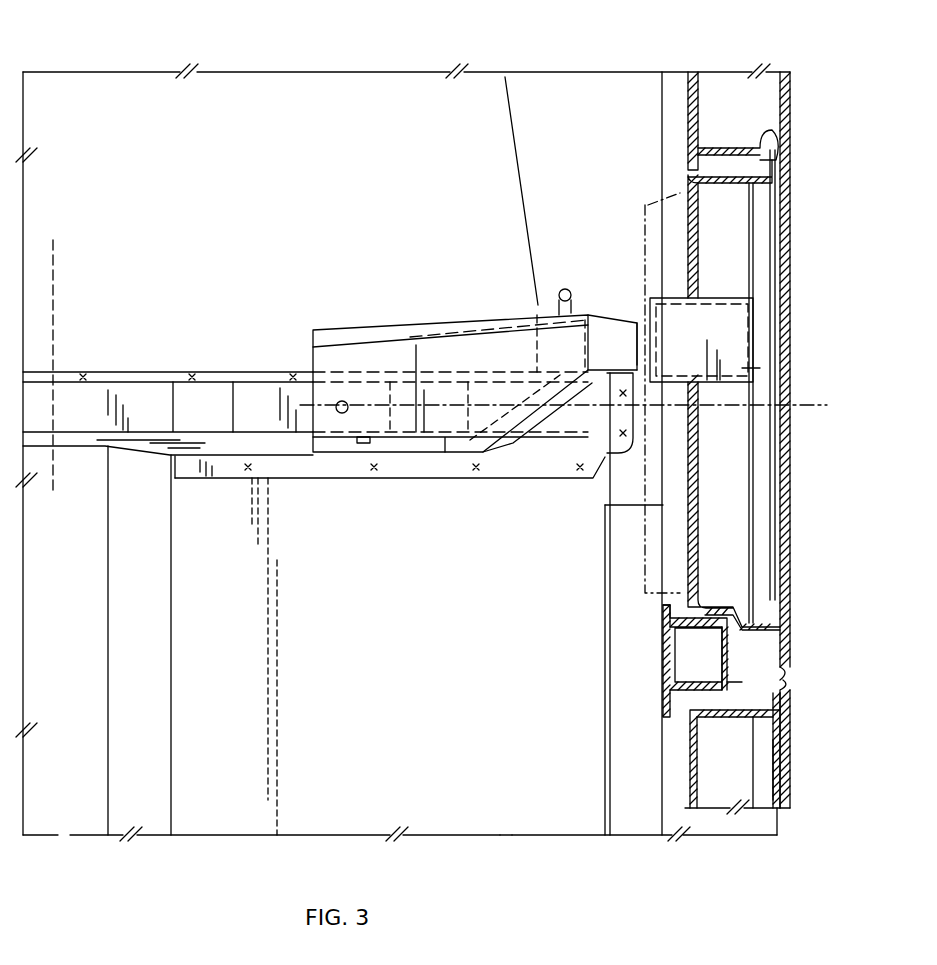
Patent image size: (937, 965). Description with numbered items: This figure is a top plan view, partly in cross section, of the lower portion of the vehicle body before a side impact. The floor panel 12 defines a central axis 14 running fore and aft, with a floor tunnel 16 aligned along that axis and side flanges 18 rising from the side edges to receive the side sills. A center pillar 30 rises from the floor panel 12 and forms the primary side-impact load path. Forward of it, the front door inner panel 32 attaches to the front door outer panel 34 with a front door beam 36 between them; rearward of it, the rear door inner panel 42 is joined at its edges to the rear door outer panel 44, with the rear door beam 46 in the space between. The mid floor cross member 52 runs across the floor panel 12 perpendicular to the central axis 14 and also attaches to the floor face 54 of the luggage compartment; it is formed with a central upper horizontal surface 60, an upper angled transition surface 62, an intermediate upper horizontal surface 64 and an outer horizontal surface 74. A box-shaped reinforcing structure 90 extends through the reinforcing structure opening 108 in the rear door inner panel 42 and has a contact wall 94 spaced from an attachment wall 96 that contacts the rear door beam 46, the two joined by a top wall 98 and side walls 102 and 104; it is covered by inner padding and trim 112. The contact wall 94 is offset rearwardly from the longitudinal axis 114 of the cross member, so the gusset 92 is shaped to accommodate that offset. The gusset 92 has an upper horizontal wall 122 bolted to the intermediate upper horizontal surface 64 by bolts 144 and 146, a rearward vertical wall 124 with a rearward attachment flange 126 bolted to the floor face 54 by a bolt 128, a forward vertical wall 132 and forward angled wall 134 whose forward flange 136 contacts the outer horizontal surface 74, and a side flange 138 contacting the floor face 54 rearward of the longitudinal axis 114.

The floor panel 12 is at (525, 815).
The central axis 14 is at (55, 287).
The floor tunnel 16 is at (65, 822).
The side flanges 18 is at (608, 807).
The center pillar 30 is at (727, 658).
The front door inner panel 32 is at (693, 763).
The front door outer panel 34 is at (790, 735).
The front door beam 36 is at (765, 777).
The rear door inner panel 42 is at (688, 533).
The rear door outer panel 44 is at (790, 547).
The rear door beam 46 is at (765, 497).
The mid floor cross member 52 is at (154, 368).
The floor face 54 is at (222, 103).
The central upper horizontal surface 60 is at (85, 418).
The upper angled transition surface 62 is at (197, 390).
The intermediate upper horizontal surface 64 is at (260, 392).
The outer horizontal surface 74 is at (567, 422).
The box-shaped reinforcing structure 90 is at (730, 282).
The gusset 92 is at (400, 308).
The contact wall 94 is at (643, 317).
The attachment wall 96 is at (755, 327).
The top wall 98 is at (723, 323).
The side wall 102 is at (713, 293).
The side wall 104 is at (718, 387).
The reinforcing structure opening 108 is at (760, 368).
The inner vehicle padding and trim 112 is at (648, 205).
The longitudinal axis 114 is at (813, 410).
The upper horizontal wall 122 is at (411, 405).
The rearward vertical wall 124 is at (377, 330).
The rearward attachment flange 126 is at (557, 291).
The bolt 128 is at (560, 288).
The forward vertical wall 132 is at (337, 438).
The forward angled wall 134 is at (508, 420).
The forward flange 136 is at (533, 413).
The side flange 138 is at (608, 337).
The bolt 144 is at (317, 328).
The bolt 146 is at (358, 443).